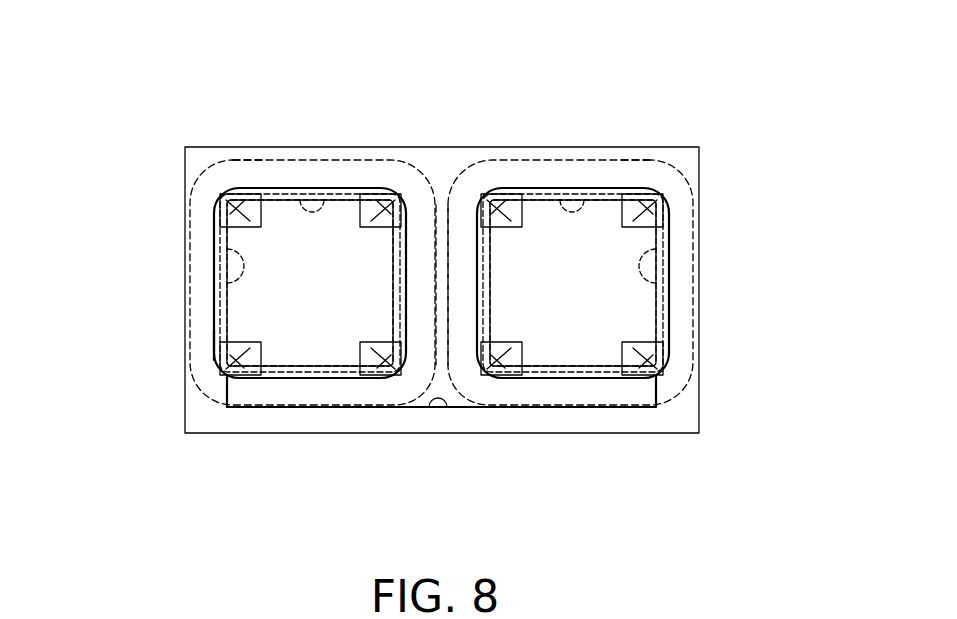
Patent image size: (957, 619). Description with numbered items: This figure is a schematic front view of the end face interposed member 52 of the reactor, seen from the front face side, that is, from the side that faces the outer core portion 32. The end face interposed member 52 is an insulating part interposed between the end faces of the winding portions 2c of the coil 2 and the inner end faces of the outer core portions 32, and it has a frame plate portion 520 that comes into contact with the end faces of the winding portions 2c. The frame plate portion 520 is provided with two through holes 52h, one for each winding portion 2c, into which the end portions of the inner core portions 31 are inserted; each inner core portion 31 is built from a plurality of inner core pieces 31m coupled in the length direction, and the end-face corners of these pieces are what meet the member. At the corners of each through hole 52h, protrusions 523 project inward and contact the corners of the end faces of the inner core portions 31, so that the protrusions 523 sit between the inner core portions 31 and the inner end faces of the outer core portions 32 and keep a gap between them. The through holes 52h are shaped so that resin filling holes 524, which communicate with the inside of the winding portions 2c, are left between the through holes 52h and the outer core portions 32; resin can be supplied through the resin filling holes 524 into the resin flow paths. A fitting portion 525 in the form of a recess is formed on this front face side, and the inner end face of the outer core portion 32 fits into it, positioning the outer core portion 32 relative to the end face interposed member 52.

The coil 2 is at (192, 170).
The winding portion 2c is at (262, 168).
The end face interposed member 52 is at (235, 143).
The frame plate portion 520 is at (700, 407).
The protrusion 523 is at (378, 196).
The resin filling hole 524 is at (312, 190).
The fitting portion 525 is at (448, 410).
The through hole 52h is at (292, 378).
The inner core piece 31m is at (439, 283).
The inner core portion 31 is at (216, 298).
The outer core portion 32 is at (206, 338).